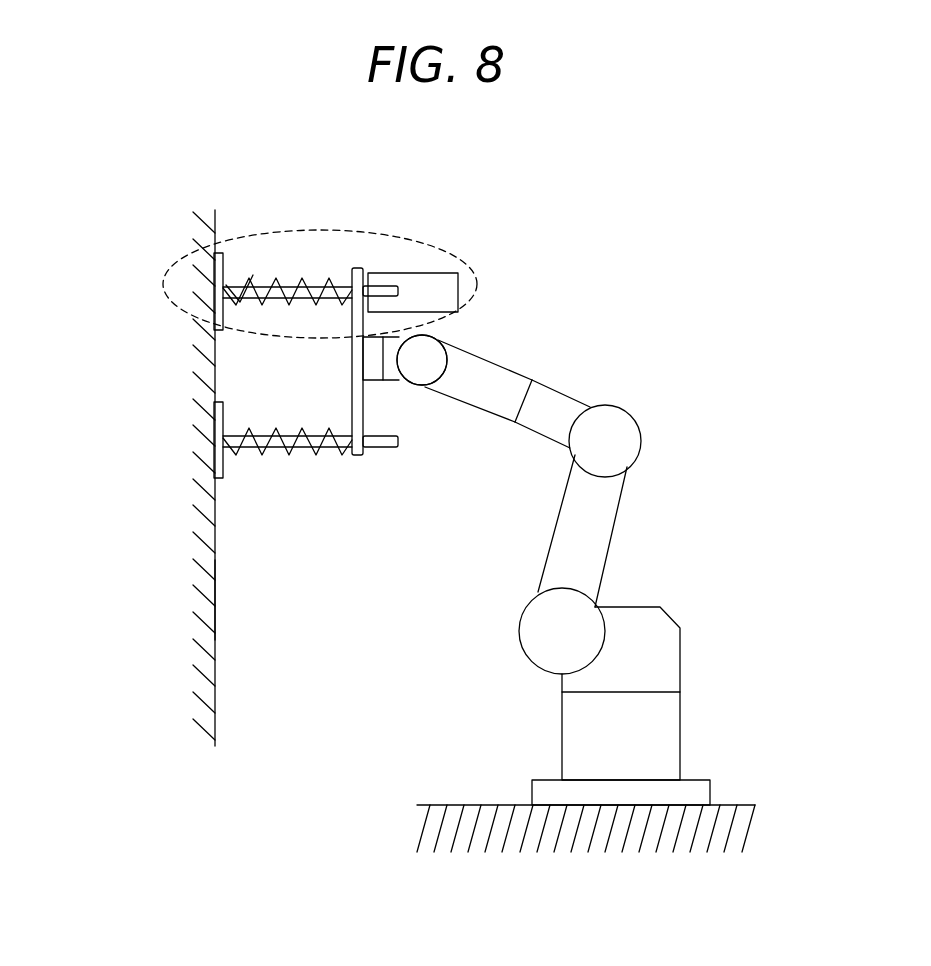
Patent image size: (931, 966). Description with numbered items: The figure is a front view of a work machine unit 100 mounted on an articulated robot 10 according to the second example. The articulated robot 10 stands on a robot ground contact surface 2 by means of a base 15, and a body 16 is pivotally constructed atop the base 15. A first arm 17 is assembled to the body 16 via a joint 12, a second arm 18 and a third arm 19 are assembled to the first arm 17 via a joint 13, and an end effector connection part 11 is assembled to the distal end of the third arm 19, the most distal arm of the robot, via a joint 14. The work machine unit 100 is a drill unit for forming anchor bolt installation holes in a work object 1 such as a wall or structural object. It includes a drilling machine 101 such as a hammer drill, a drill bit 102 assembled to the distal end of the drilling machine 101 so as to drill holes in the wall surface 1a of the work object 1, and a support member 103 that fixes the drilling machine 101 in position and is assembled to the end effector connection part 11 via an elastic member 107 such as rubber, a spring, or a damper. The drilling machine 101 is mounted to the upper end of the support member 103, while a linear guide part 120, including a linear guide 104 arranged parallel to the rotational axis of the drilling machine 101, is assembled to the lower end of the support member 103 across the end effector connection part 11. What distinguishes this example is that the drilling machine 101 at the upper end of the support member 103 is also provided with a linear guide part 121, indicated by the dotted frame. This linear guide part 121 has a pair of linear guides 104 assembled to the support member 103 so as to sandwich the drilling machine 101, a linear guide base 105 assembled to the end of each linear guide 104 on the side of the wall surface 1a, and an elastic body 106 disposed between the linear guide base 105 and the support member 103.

The work object 1 is at (205, 396).
The wall surface 1a is at (215, 598).
The robot ground contact surface 2 is at (468, 805).
The articulated robot 10 is at (694, 429).
The end effector connection part 11 is at (434, 335).
The joint 12 is at (548, 635).
The joint 13 is at (632, 452).
The joint 14 is at (420, 370).
The base 15 is at (680, 732).
The body 16 is at (680, 628).
The first arm 17 is at (617, 525).
The second arm 18 is at (562, 400).
The third arm 19 is at (487, 367).
The work machine unit 100 is at (497, 226).
The drilling machine 101 is at (476, 277).
The drill bit 102 is at (262, 290).
The support member 103 is at (357, 268).
The linear guide 104 is at (380, 290).
The linear guide base 105 is at (220, 255).
The elastic body 106 is at (328, 287).
The elastic member 107 is at (372, 360).
The linear guide part 120 is at (283, 470).
The linear guide part 121 is at (250, 266).